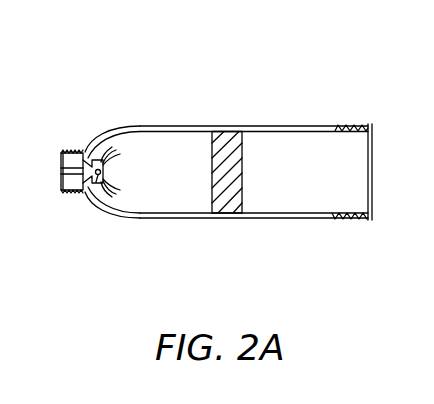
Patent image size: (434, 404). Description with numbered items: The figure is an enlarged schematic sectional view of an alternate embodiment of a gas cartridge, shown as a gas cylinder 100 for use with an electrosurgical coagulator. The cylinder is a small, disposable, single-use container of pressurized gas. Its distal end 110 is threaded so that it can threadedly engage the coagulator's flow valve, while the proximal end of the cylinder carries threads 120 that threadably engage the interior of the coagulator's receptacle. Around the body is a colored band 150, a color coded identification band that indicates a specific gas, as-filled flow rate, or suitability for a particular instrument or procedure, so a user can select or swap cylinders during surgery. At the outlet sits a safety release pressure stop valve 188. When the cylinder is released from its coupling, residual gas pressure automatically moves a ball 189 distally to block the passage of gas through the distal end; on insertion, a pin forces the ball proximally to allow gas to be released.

The gas cylinder 100 is at (273, 88).
The distal end 110 is at (74, 152).
The threads 120 is at (357, 140).
The colored band 150 is at (223, 205).
The safety release pressure stop valve 188 is at (88, 152).
The ball 189 is at (97, 205).